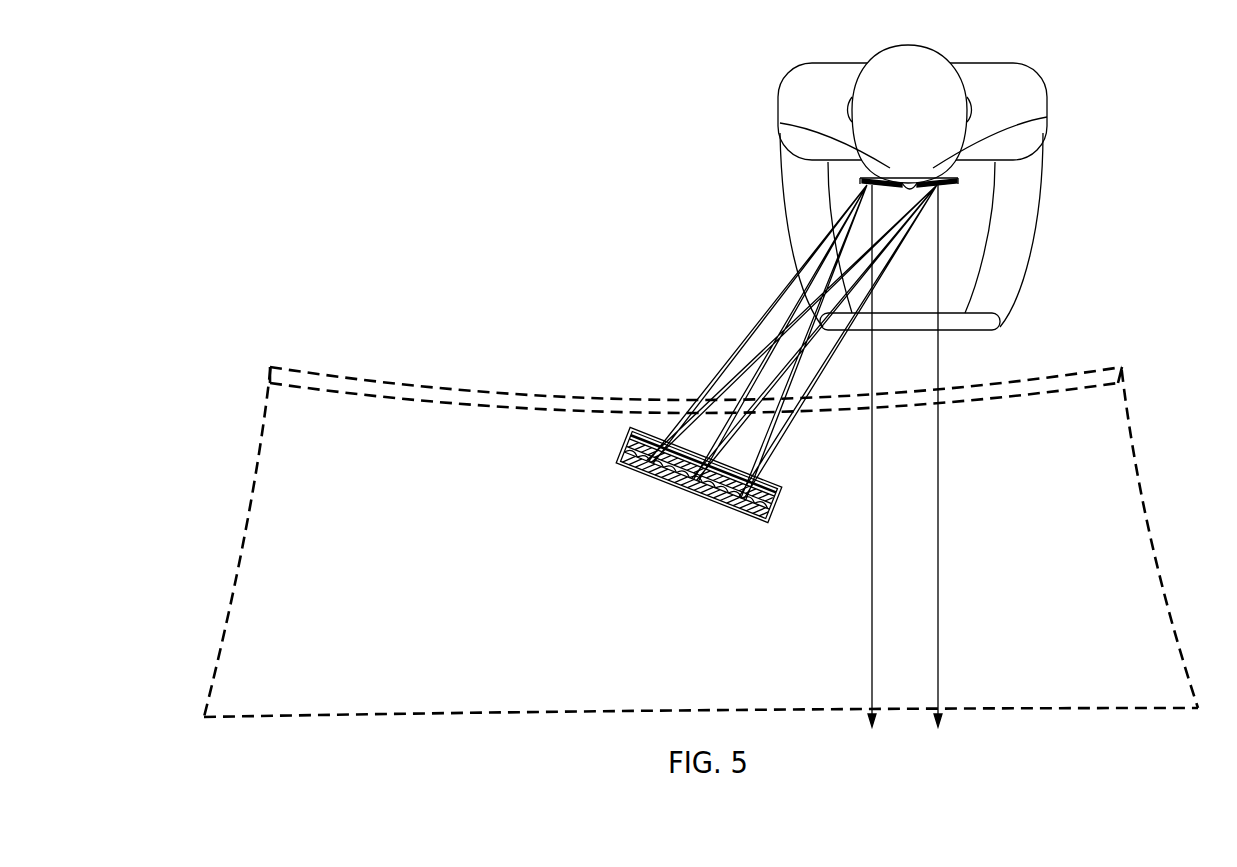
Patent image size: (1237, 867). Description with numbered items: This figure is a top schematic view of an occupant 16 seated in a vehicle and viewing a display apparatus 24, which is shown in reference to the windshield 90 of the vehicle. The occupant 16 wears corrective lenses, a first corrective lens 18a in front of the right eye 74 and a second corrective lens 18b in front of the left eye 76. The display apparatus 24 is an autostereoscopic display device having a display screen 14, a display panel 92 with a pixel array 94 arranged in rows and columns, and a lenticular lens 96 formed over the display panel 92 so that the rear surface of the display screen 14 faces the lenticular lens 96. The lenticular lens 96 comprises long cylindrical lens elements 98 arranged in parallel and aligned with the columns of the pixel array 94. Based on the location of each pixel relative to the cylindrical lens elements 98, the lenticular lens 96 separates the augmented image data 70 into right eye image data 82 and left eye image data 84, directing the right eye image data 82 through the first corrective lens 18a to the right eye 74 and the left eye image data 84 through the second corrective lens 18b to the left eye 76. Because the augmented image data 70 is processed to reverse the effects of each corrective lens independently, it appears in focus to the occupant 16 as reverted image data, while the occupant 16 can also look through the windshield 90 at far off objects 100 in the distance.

The occupant 16 is at (813, 85).
The first corrective lens 18a is at (868, 185).
The second corrective lens 18b is at (938, 185).
The right eye 74 is at (780, 123).
The left eye 76 is at (1047, 117).
The display screen 14 is at (712, 459).
The display apparatus 24 is at (602, 443).
The augmented image data 70 is at (650, 435).
The right eye image data 82 is at (756, 583).
The left eye image data 84 is at (706, 521).
The windshield 90 is at (1105, 467).
The display panel 92 is at (740, 513).
The pixel array 94 is at (767, 512).
The lenticular lens 96 is at (773, 503).
The cylindrical lens elements 98 is at (780, 495).
The far off objects 100 is at (940, 640).